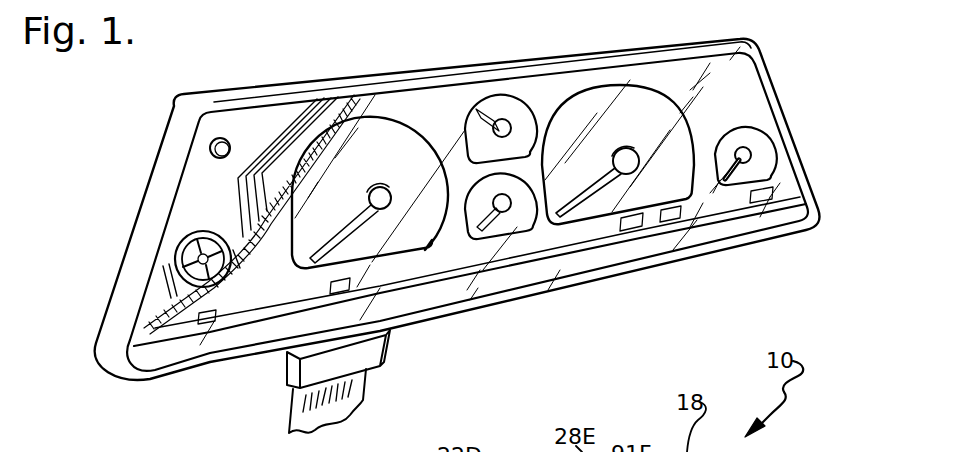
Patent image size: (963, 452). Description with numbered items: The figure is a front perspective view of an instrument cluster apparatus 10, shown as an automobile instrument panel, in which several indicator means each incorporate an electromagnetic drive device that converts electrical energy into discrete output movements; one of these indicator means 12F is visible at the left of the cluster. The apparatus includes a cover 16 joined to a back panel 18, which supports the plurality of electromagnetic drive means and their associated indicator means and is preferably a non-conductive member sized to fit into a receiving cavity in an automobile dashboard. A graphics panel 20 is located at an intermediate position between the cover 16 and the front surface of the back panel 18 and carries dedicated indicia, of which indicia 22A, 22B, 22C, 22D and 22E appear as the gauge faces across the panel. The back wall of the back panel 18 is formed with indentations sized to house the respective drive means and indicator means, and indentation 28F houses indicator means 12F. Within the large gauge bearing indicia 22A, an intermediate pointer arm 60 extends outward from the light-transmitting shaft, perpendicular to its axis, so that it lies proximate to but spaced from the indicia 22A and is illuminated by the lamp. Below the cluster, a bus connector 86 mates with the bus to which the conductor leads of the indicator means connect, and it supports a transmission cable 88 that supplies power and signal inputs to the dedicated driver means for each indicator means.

The instrument cluster apparatus 10 is at (805, 95).
The indicator means 12F is at (158, 232).
The cover 16 is at (747, 72).
The back panel 18 is at (258, 123).
The graphics panel 20 is at (167, 325).
The indicia 22A is at (654, 97).
The indicia 22B is at (767, 147).
The indicia 22C is at (528, 228).
The indicia 22D is at (522, 100).
The indicia 22E is at (413, 130).
The indentation 28F is at (193, 228).
The pointer arm 60 is at (588, 186).
The bus connector 86 is at (372, 357).
The transmission cable 88 is at (363, 397).